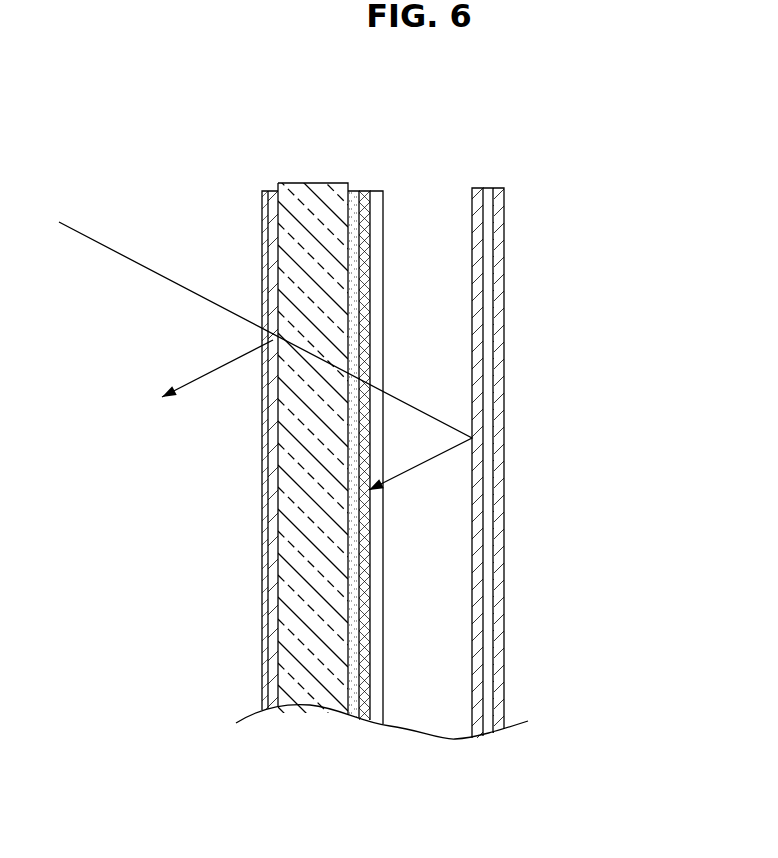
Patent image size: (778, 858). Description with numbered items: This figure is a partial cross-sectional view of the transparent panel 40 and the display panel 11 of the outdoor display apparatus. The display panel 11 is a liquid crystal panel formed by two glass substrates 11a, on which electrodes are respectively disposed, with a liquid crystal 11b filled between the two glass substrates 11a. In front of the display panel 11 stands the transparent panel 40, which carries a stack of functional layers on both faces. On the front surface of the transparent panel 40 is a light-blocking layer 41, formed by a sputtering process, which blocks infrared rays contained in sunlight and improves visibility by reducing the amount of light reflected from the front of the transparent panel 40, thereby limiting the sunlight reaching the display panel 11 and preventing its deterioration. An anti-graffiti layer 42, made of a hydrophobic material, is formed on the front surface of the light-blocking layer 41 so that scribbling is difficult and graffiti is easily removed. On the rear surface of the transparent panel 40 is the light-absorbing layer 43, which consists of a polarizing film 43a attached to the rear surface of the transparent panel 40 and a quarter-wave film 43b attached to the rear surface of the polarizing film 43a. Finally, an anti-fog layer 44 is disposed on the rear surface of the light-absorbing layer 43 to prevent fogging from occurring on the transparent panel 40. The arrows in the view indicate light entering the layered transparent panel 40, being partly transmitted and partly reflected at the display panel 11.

The display panel 11 is at (530, 422).
The glass substrates 11a is at (477, 188).
The liquid crystal 11b is at (500, 238).
The transparent panel 40 is at (302, 183).
The light-blocking layer 41 is at (273, 191).
The anti-graffiti layer 42 is at (261, 196).
The light-absorbing layer 43 is at (417, 131).
The polarizing film 43a is at (353, 191).
The λ/4 film 43b is at (365, 191).
The anti-fog layer 44 is at (384, 195).